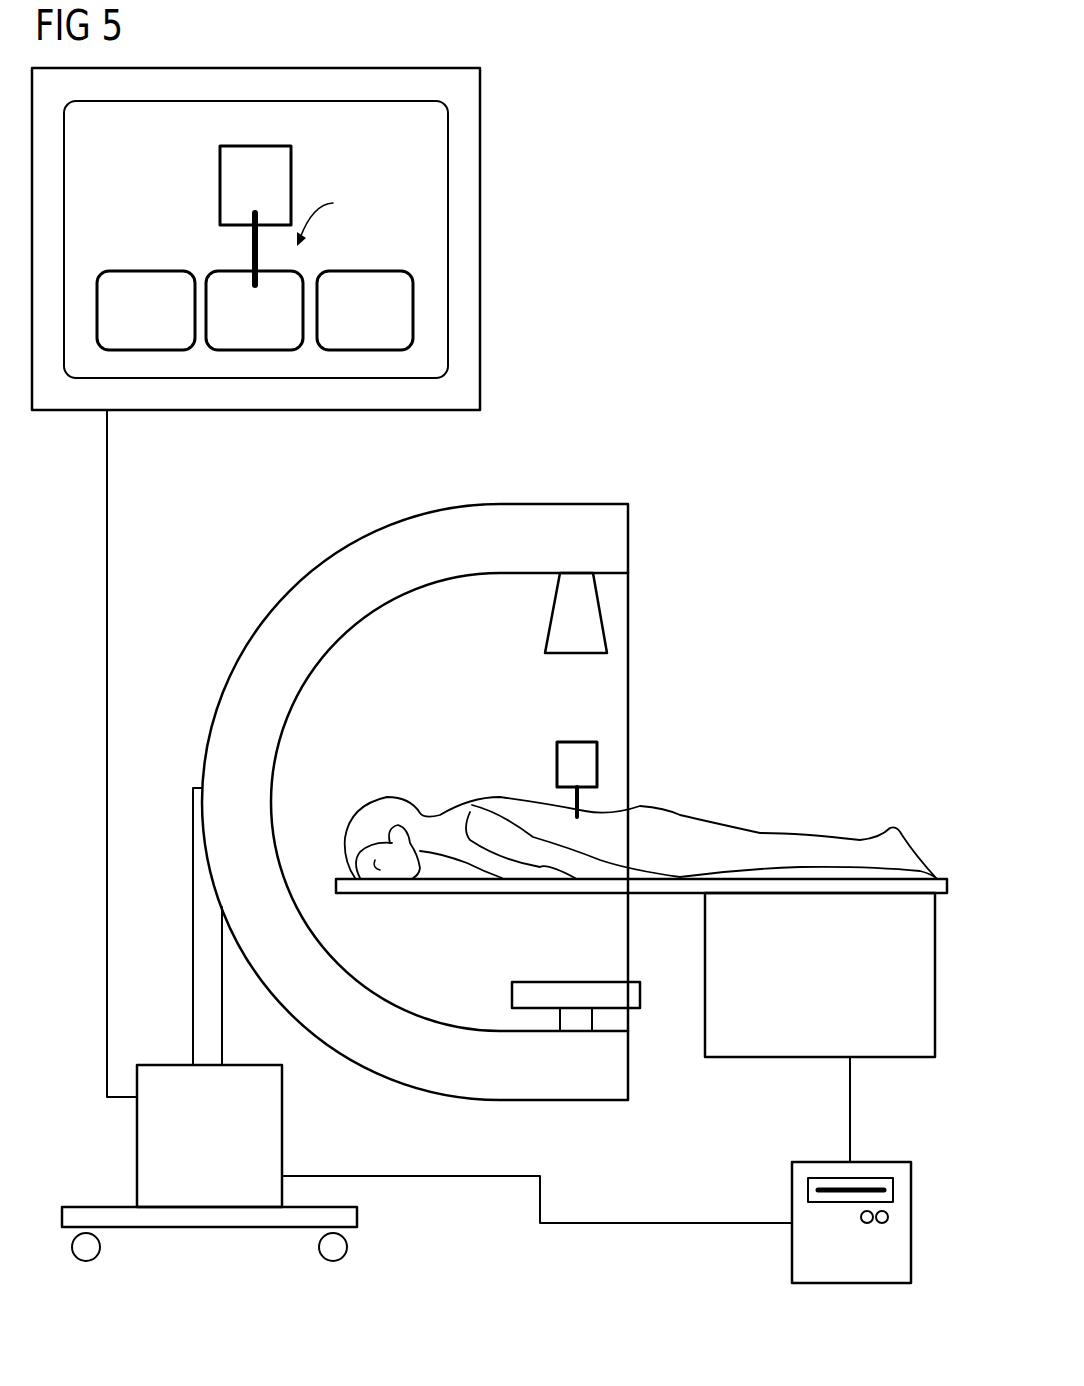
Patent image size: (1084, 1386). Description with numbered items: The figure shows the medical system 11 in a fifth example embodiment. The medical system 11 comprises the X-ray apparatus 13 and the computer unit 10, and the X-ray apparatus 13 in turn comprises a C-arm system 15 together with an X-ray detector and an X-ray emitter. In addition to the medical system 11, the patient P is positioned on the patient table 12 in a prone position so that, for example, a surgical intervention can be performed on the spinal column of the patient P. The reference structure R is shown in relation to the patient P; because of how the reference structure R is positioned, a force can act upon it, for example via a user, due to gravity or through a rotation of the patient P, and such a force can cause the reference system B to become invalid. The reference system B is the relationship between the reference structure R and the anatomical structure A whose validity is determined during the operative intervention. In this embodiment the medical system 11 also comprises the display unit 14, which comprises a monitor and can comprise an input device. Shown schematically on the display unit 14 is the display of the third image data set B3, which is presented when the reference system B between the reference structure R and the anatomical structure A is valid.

The computer unit 10 is at (850, 1283).
The medical system 11 is at (772, 74).
The patient table 12 is at (753, 1057).
The X-ray apparatus 13 is at (710, 651).
The display unit 14 is at (480, 212).
The C-arm system 15 is at (596, 1102).
The anatomical structure A is at (222, 271).
The reference system B is at (330, 216).
The third image data set B3 is at (448, 256).
The patient P is at (665, 808).
The reference structure R is at (220, 186).